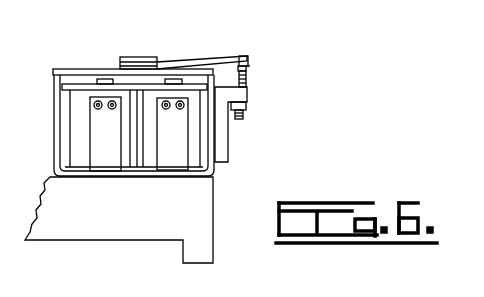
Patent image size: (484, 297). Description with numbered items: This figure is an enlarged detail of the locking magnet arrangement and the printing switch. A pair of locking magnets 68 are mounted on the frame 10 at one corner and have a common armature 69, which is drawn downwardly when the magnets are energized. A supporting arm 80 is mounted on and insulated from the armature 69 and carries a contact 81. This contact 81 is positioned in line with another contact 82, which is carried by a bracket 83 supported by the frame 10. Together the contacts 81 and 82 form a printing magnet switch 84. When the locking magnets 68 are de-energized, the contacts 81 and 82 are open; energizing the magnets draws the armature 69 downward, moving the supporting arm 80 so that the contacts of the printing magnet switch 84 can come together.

The frame 10 is at (207, 196).
The locking magnets 68 is at (153, 143).
The armature 69 is at (88, 72).
The supporting arm 80 is at (198, 60).
The contact 81 is at (251, 61).
The contact 82 is at (250, 69).
The bracket 83 is at (225, 138).
The printing magnet switch 84 is at (250, 67).